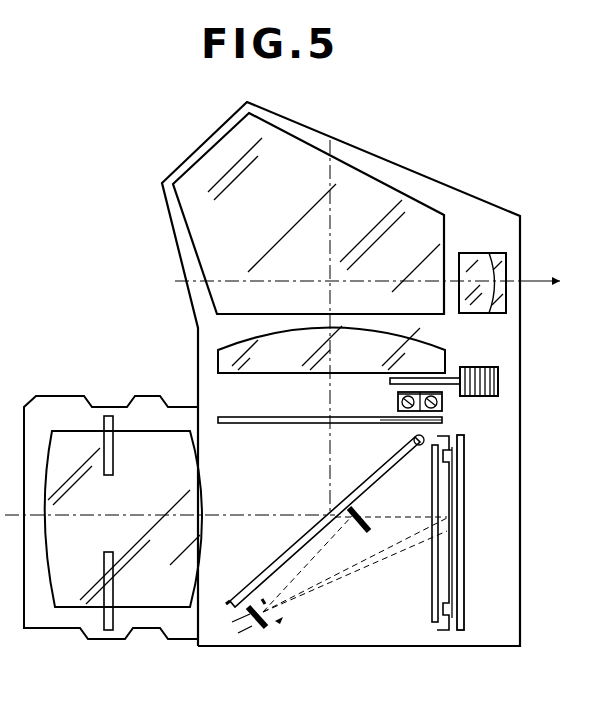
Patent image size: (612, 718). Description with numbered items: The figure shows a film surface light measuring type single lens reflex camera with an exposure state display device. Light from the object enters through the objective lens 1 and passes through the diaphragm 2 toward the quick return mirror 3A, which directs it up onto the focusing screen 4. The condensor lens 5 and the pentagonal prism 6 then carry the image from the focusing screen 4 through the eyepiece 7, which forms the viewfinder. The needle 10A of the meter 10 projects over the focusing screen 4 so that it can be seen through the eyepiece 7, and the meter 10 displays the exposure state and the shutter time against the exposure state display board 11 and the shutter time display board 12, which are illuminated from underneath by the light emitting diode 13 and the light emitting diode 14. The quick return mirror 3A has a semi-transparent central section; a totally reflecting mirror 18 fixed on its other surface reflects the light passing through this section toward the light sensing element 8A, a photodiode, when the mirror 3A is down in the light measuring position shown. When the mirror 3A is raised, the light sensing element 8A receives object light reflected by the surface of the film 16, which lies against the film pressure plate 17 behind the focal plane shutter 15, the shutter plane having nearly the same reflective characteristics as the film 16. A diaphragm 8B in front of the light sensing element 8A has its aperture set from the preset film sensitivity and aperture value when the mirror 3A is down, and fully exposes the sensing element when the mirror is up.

The objective lens 1 is at (67, 595).
The diaphragm 2 is at (108, 632).
The quick return mirror 3A is at (229, 606).
The focusing screen 4 is at (268, 424).
The condensor lens 5 is at (270, 373).
The pentagonal prism 6 is at (207, 238).
The eyepiece 7 is at (508, 259).
The light sensing element 8A is at (262, 628).
The diaphragm 8B is at (283, 619).
The meter 10 is at (498, 381).
The needle 10A is at (447, 378).
The exposure state display board 11 is at (440, 396).
The shutter time display board 12 is at (398, 395).
The light emitting diode 13 is at (443, 404).
The light emitting diode 14 is at (408, 421).
The focal plane shutter 15 is at (436, 600).
The film 16 is at (453, 562).
The film pressure plate 17 is at (463, 556).
The totally reflecting mirror 18 is at (368, 514).